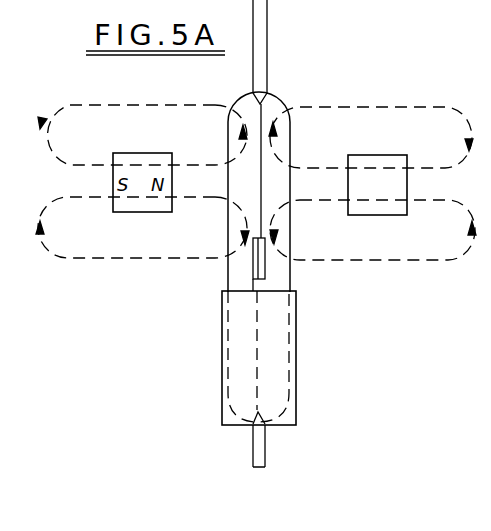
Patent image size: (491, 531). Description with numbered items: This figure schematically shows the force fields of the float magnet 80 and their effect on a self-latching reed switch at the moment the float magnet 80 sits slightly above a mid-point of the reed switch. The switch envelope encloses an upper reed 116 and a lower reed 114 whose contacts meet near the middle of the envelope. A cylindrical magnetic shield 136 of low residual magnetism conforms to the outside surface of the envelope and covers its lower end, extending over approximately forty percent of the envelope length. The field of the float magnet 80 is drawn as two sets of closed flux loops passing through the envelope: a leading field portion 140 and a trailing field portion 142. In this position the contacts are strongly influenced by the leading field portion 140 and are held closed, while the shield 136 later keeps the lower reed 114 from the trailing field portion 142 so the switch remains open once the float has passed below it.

The float magnet 80 is at (408, 188).
The lower reed 114 is at (256, 340).
The upper reed 116 is at (262, 162).
The magnetic shield 136 is at (297, 356).
The leading field portion 140 is at (366, 261).
The trailing field portion 142 is at (385, 107).